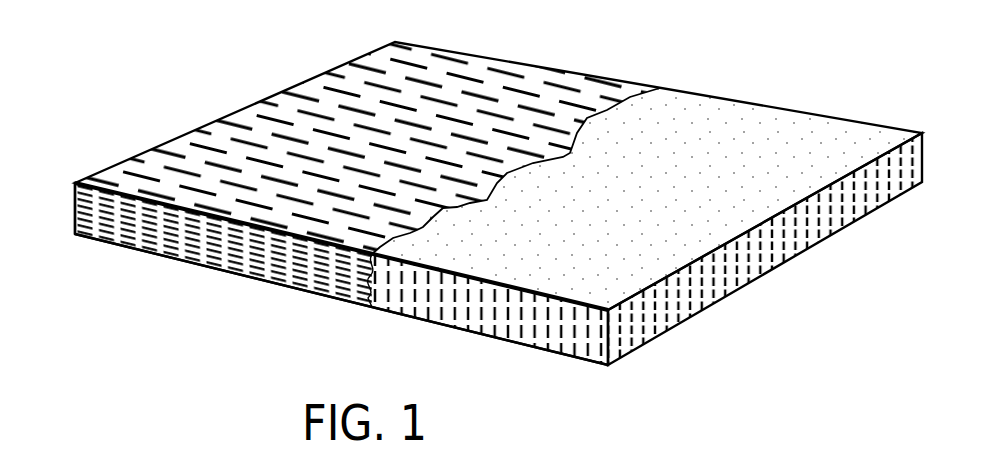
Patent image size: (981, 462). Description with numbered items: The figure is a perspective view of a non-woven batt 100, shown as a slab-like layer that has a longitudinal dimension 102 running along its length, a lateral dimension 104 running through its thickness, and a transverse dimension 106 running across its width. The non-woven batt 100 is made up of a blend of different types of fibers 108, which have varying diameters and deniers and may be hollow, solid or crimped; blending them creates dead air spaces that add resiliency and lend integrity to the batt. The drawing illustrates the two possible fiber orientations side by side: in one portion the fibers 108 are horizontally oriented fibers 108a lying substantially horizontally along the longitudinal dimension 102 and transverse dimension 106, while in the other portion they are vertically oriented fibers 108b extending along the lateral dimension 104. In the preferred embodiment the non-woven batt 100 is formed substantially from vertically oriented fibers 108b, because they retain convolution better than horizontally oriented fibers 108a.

The non-woven batt 100 is at (783, 84).
The longitudinal dimension 102 is at (217, 267).
The lateral dimension 104 is at (74, 217).
The transverse dimension 106 is at (243, 110).
The fibers 108 is at (665, 103).
The horizontally oriented fibers 108a is at (277, 273).
The vertically oriented fibers 108b is at (460, 313).